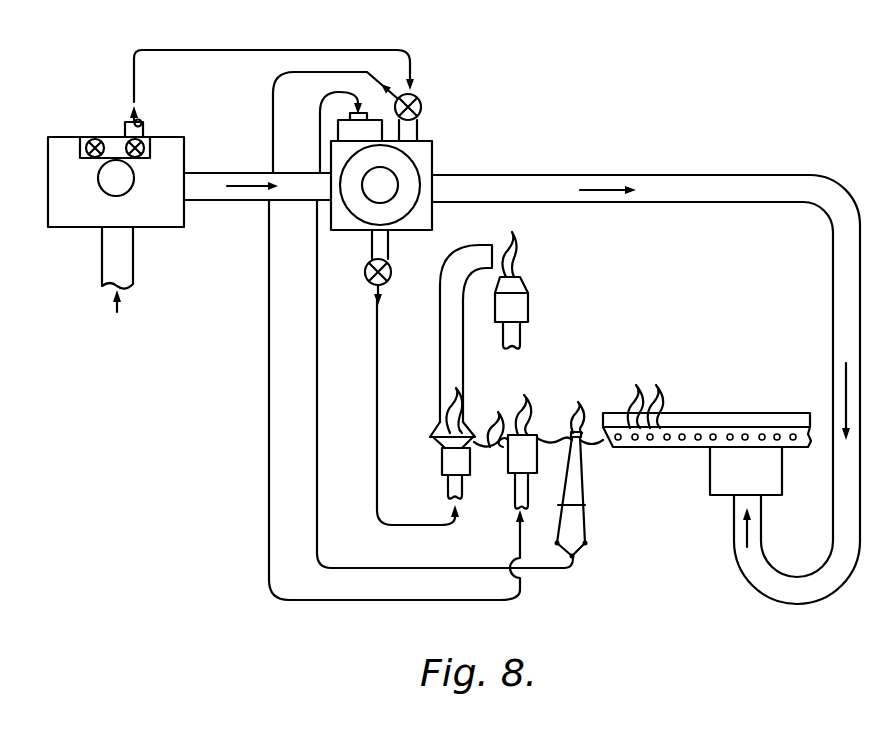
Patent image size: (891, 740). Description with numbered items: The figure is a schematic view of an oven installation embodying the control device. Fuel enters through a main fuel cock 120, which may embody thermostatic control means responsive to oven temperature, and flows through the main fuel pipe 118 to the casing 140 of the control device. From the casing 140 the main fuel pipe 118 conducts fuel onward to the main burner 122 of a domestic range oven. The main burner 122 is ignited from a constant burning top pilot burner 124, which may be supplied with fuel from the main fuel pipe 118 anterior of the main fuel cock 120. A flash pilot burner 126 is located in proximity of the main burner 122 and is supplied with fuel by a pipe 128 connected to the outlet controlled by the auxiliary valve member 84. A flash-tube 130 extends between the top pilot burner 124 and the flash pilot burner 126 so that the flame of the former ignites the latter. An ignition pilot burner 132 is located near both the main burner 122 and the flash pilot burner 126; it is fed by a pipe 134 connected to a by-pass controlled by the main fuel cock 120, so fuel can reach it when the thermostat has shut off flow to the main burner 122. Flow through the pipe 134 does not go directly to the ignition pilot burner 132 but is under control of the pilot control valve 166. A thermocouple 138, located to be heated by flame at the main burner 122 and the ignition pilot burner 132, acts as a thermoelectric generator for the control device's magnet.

The auxiliary valve member 84 is at (390, 272).
The main fuel pipe 118 is at (238, 200).
The main fuel cock 120 is at (152, 218).
The main burner 122 is at (677, 440).
The top pilot burner 124 is at (520, 307).
The flash pilot burner 126 is at (441, 465).
The pipe 128 is at (377, 418).
The flash-tube 130 is at (442, 348).
The ignition pilot burner 132 is at (517, 460).
The pipe 134 is at (270, 50).
The thermocouple 138 is at (586, 515).
The casing 140 is at (433, 163).
The pilot control valve 166 is at (421, 102).